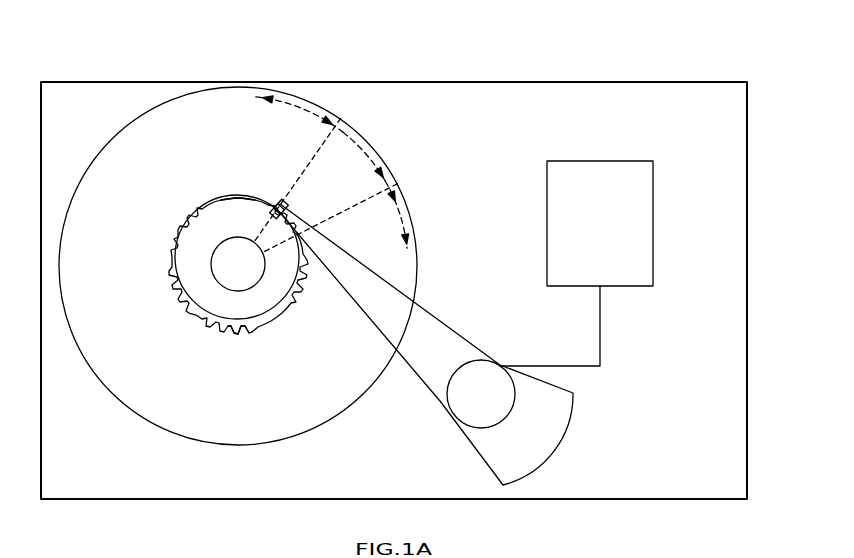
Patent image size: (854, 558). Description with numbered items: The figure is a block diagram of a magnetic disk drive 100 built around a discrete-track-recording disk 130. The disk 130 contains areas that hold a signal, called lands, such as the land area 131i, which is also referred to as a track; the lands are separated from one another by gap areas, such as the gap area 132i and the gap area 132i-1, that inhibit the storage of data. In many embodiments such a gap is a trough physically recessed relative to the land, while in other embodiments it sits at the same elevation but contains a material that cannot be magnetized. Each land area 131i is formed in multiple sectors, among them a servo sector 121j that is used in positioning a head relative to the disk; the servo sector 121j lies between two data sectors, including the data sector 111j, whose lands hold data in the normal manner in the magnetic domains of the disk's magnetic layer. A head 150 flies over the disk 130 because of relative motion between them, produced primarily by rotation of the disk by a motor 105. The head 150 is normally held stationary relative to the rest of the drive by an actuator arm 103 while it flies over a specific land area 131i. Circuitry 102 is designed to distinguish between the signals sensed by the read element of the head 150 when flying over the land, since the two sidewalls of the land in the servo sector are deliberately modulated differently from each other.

The disk drive 100 is at (182, 66).
The circuitry 102 is at (612, 232).
The actuator arm 103 is at (421, 368).
The motor 105 is at (247, 274).
The data sector 111j is at (394, 215).
The servo sector 121j is at (361, 157).
The discrete-track-recording disk 130 is at (130, 408).
The land area 131i is at (198, 319).
The gap area 132i is at (239, 200).
The gap area 132i-1 is at (249, 333).
The head 150 is at (287, 207).